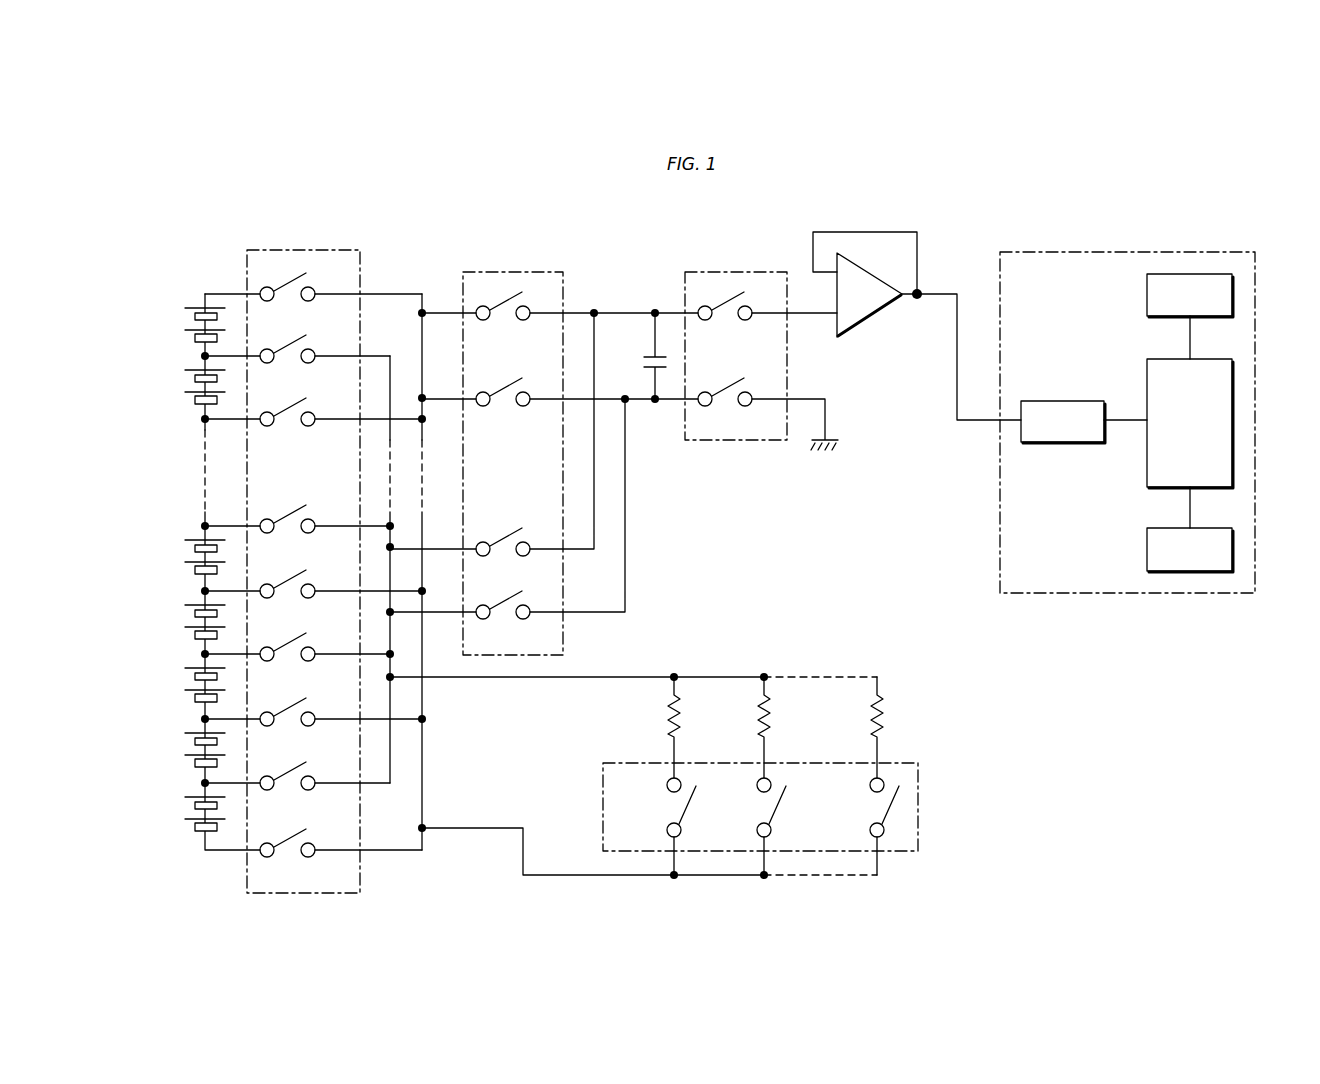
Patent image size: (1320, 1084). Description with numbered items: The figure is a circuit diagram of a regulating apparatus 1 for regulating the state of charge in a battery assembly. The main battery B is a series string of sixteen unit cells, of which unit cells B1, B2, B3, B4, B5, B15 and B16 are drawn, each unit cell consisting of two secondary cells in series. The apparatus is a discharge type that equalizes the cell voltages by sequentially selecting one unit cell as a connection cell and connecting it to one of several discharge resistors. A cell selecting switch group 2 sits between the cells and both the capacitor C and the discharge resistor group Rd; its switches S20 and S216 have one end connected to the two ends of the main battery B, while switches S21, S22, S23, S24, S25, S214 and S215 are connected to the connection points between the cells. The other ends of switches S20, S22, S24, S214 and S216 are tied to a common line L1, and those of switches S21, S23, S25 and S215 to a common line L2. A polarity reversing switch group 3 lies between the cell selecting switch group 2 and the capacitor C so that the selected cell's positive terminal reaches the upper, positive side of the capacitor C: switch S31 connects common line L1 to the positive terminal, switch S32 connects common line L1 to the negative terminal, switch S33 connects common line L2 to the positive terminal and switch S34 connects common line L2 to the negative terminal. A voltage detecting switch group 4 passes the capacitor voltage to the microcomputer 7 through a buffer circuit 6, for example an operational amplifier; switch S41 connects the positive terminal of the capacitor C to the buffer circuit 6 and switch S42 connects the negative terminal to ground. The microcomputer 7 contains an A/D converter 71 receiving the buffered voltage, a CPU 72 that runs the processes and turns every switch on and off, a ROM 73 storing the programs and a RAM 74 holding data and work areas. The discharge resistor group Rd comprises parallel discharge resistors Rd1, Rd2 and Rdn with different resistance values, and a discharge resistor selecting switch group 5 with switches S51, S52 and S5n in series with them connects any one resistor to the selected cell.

The regulating apparatus 1 is at (488, 210).
The main battery B is at (182, 274).
The unit cell B1 is at (192, 811).
The unit cell B2 is at (192, 747).
The unit cell B3 is at (192, 682).
The unit cell B4 is at (192, 619).
The unit cell B5 is at (192, 554).
The unit cell B15 is at (192, 386).
The unit cell B16 is at (192, 324).
The cell selecting switch group 2 is at (300, 250).
The switch S20 is at (270, 857).
The switch S21 is at (270, 790).
The switch S22 is at (270, 726).
The switch S23 is at (270, 661).
The switch S24 is at (270, 598).
The switch S25 is at (270, 533).
The switch S214 is at (270, 426).
The switch S215 is at (270, 363).
The switch S216 is at (270, 301).
The common line L1 is at (422, 814).
The common line L2 is at (390, 766).
The polarity reversing switch group 3 is at (505, 272).
The switch S31 is at (486, 320).
The switch S32 is at (486, 406).
The switch S33 is at (486, 556).
The switch S34 is at (486, 619).
The capacitor C is at (645, 363).
The voltage detecting switch group 4 is at (730, 272).
The switch S41 is at (708, 320).
The switch S42 is at (708, 406).
The buffer circuit 6 is at (862, 325).
The microcomputer 7 is at (1210, 252).
The A/D converter 71 is at (1047, 401).
The CPU 72 is at (1147, 379).
The ROM 73 is at (1147, 307).
The RAM 74 is at (1147, 540).
The discharge resistor group Rd is at (900, 689).
The discharge resistor Rd1 is at (668, 729).
The discharge resistor Rd2 is at (758, 729).
The discharge resistor Rdn is at (870, 729).
The discharge resistor selecting switch group 5 is at (924, 784).
The switch S51 is at (666, 816).
The switch S52 is at (756, 816).
The switch S5n is at (868, 816).